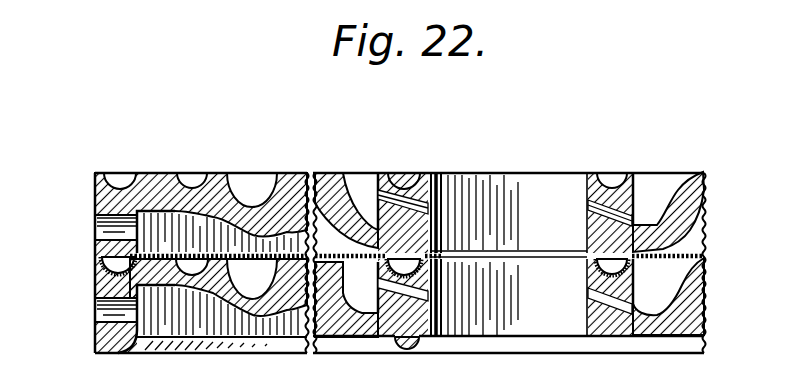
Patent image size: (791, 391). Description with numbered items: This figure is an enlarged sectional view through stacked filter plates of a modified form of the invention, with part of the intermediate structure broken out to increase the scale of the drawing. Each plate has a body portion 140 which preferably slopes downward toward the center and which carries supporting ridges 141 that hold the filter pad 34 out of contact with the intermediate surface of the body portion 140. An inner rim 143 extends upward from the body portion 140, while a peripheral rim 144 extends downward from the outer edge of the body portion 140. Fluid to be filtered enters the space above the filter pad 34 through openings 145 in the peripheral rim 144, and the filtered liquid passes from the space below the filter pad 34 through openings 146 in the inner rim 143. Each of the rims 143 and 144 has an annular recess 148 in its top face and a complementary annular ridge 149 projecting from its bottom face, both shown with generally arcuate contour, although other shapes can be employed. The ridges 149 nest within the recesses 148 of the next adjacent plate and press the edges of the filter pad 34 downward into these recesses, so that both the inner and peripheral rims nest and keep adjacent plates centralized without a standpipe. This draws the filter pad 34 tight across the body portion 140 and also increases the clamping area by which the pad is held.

The filter pad 34 is at (190, 252).
The body portion 140 is at (268, 190).
The supporting ridges 141 is at (250, 183).
The inner rim 143 is at (443, 180).
The peripheral rim 144 is at (96, 198).
The openings 145 is at (96, 235).
The openings 146 is at (430, 312).
The annular recess 148 is at (123, 175).
The annular ridge 149 is at (118, 355).